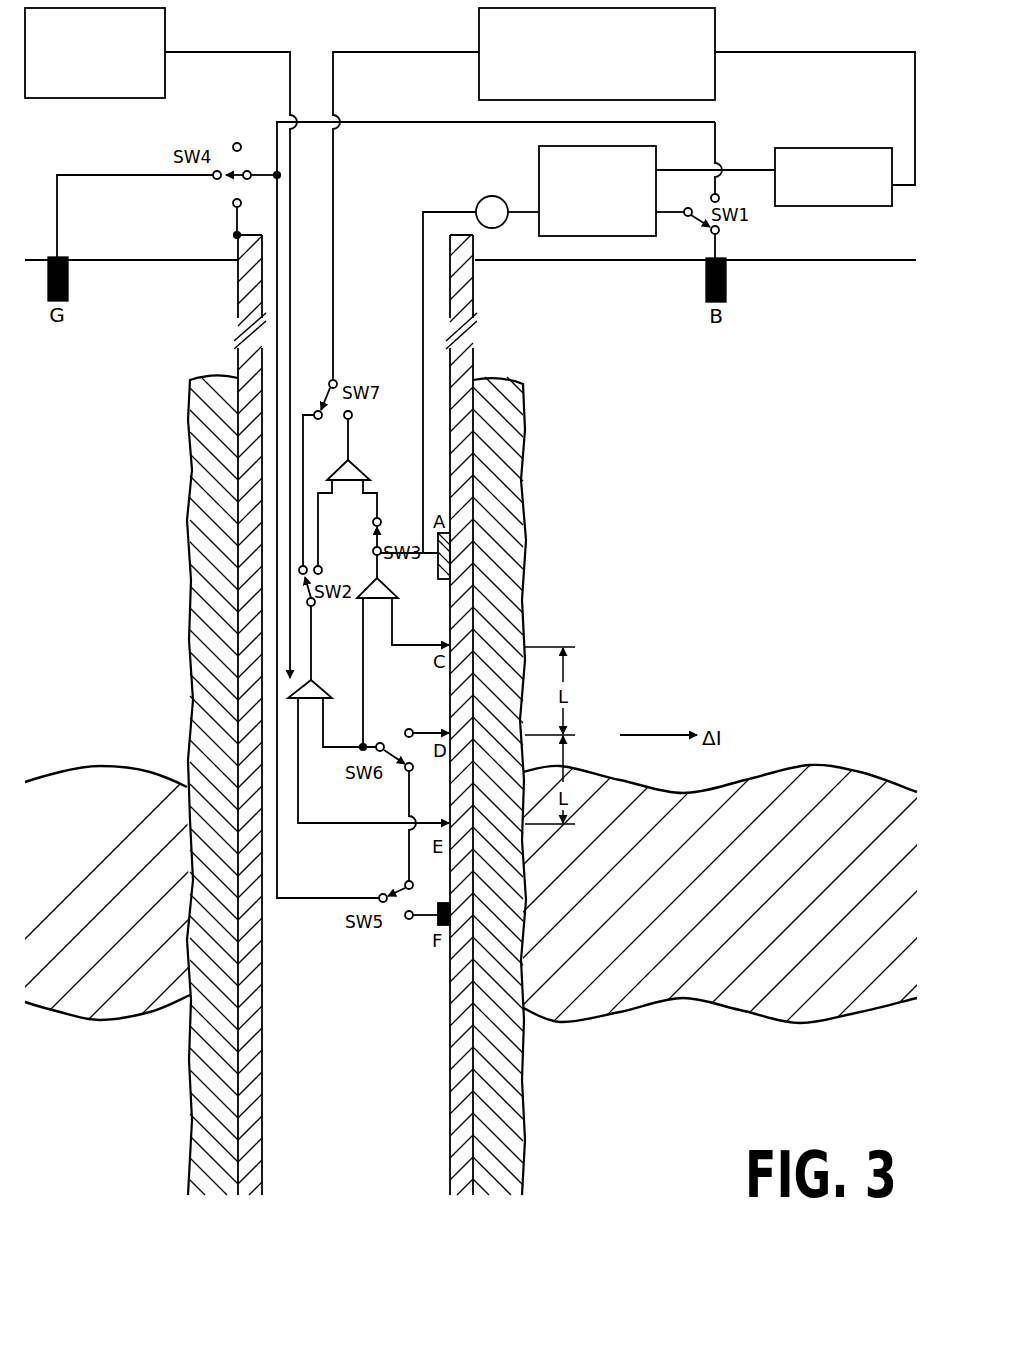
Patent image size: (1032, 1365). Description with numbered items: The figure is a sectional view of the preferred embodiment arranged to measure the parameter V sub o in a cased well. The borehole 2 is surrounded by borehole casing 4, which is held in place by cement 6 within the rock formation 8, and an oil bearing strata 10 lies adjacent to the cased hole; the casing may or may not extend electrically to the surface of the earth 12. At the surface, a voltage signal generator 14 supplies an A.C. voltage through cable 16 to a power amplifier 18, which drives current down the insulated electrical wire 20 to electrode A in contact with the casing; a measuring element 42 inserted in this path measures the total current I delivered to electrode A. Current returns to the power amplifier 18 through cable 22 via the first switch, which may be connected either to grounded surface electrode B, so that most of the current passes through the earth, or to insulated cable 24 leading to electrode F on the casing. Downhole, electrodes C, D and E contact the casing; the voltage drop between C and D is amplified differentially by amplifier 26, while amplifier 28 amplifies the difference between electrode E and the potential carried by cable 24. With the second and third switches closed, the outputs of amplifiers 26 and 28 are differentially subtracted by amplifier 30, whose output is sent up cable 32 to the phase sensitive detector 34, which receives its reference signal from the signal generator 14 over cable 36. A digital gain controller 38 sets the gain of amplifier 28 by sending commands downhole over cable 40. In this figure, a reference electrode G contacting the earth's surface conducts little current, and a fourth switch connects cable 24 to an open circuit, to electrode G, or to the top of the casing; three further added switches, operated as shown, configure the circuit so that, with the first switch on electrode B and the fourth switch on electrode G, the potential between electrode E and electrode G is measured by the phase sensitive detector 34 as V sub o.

The borehole 2 is at (312, 1113).
The borehole casing 4 is at (449, 1110).
The cement 6 is at (527, 1090).
The rock formation 8 is at (646, 1108).
The oil bearing strata 10 is at (688, 1002).
The surface of the earth 12 is at (575, 260).
The voltage signal generator 14 is at (783, 148).
The cable 16 is at (727, 170).
The power amplifier 18 is at (539, 180).
The insulated electrical wire 20 is at (423, 292).
The cable 22 is at (672, 214).
The insulated cable 24 is at (372, 120).
The amplifier 26 is at (388, 590).
The amplifier 28 is at (318, 685).
The amplifier 30 is at (355, 466).
The cable 32 is at (333, 326).
The phase sensitive detector 34 is at (478, 34).
The cable 36 is at (775, 52).
The digital gain controller 38 is at (165, 26).
The cable 40 is at (293, 240).
The current measuring element 42 is at (478, 202).